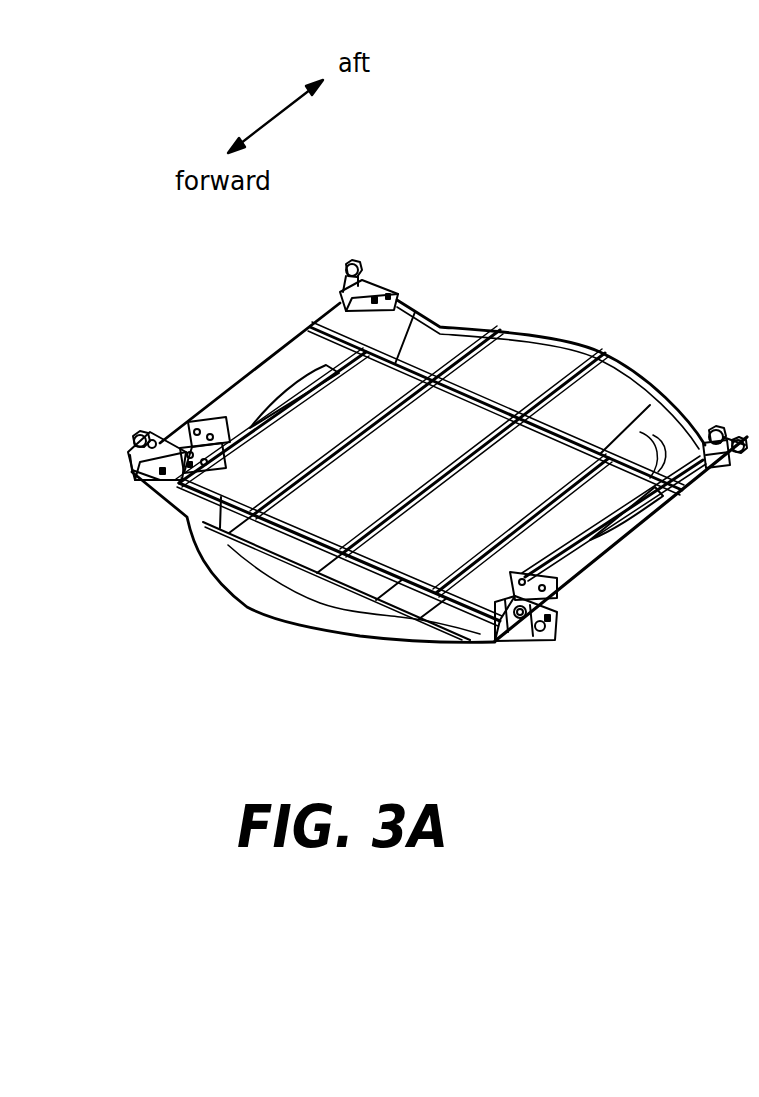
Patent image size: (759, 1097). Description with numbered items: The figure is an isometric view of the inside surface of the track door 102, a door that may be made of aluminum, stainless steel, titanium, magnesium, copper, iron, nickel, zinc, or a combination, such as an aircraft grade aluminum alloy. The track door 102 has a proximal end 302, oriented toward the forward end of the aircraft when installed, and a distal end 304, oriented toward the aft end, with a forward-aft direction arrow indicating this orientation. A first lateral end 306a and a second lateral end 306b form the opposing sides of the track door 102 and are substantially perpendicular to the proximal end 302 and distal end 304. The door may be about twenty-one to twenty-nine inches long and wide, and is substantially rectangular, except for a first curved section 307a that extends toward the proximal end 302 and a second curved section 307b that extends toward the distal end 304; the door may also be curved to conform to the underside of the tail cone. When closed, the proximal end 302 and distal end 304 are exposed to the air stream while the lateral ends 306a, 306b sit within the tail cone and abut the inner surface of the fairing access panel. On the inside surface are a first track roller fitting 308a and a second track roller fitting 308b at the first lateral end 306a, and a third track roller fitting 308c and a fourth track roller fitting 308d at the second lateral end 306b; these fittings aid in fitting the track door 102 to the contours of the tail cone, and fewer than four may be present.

The track door 102 is at (602, 632).
The proximal end 302 is at (277, 614).
The distal end 304 is at (590, 357).
The first lateral end 306a is at (285, 368).
The second lateral end 306b is at (622, 538).
The first curved section 307a is at (237, 572).
The second curved section 307b is at (513, 360).
The first track roller fitting 308a is at (373, 283).
The second track roller fitting 308b is at (160, 447).
The third track roller fitting 308c is at (712, 430).
The fourth track roller fitting 308d is at (507, 640).